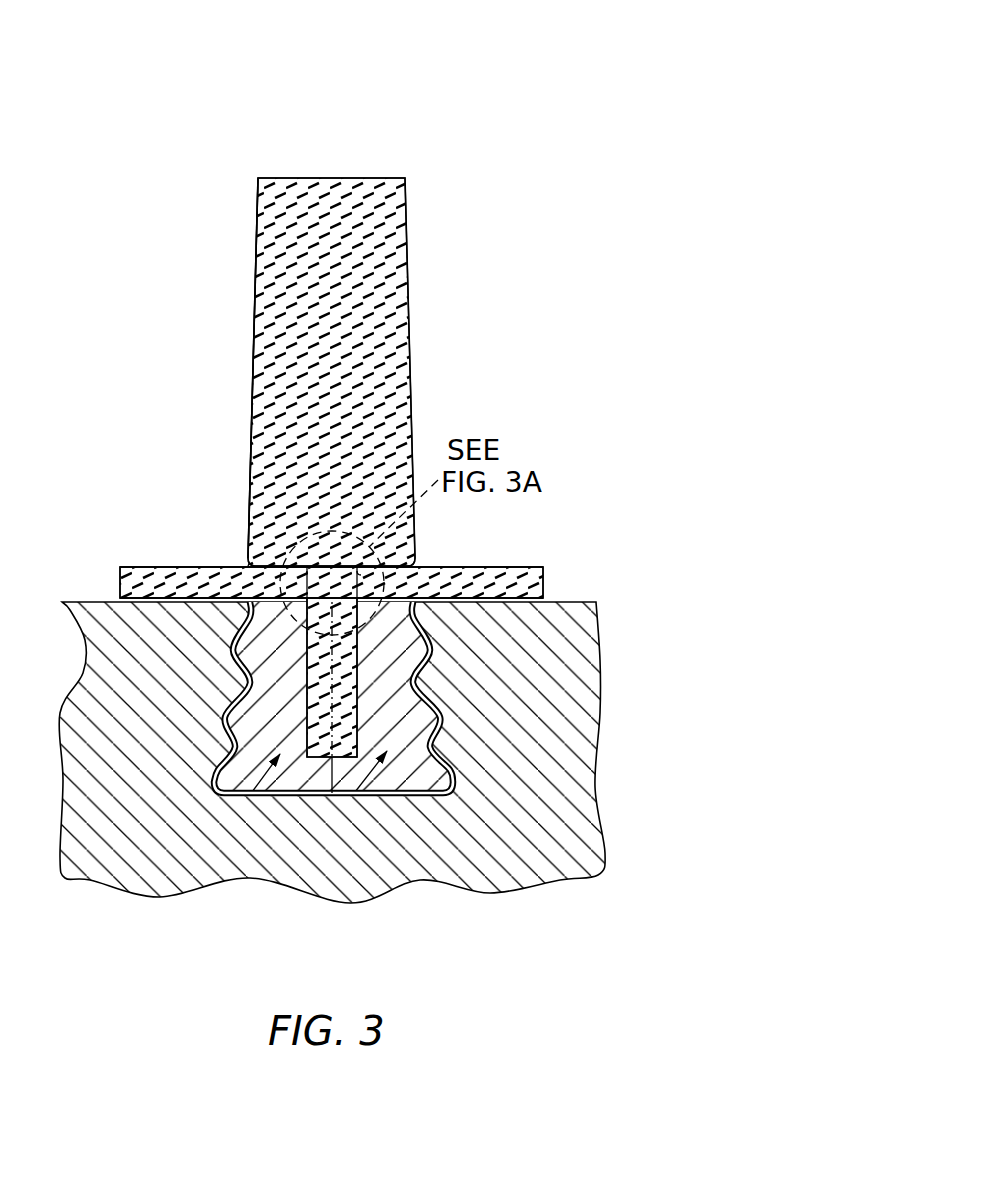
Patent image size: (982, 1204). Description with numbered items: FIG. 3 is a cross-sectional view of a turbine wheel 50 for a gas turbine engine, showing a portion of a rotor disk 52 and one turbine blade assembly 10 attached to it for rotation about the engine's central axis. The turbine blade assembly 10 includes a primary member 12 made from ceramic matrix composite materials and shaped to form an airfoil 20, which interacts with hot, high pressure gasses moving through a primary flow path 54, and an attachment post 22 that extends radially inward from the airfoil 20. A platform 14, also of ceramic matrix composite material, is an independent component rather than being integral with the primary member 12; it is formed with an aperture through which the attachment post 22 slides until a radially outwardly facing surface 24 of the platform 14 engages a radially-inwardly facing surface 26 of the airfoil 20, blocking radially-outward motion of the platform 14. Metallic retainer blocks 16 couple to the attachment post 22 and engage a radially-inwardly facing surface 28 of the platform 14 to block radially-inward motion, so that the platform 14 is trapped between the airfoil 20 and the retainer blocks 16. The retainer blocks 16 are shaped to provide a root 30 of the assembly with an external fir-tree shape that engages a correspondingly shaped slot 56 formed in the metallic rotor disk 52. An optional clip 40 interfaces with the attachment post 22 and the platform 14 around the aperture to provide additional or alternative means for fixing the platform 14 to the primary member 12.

The turbine blade assembly 10 is at (512, 272).
The primary member 12 is at (324, 372).
The platform 14 is at (352, 555).
The retainer blocks 16 is at (293, 800).
The airfoil 20 is at (253, 382).
The attachment post 22 is at (304, 688).
The radially outwardly facing surface 24 is at (465, 567).
The radially-inwardly facing surface 26 is at (253, 571).
The radially-inwardly facing surface 28 is at (172, 600).
The root 30 is at (326, 782).
The clip 40 is at (318, 577).
The turbine wheel 50 is at (661, 148).
The rotor disk 52 is at (604, 735).
The primary flow path 54 is at (172, 333).
The slot 56 is at (428, 796).